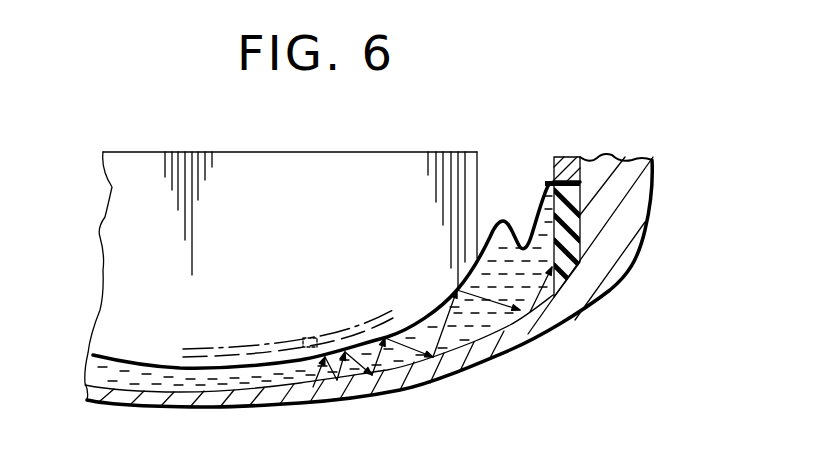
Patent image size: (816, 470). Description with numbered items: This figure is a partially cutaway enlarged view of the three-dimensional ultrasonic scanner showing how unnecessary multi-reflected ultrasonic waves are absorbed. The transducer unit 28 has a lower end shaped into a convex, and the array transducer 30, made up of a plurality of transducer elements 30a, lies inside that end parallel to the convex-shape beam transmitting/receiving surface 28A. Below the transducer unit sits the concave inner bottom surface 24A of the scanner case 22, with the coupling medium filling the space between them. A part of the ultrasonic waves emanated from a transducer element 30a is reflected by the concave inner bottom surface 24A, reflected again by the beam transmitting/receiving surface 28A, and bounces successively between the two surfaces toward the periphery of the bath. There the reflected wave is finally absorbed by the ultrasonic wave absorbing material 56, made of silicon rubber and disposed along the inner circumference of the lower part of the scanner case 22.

The scanner case 22 is at (640, 204).
The ultrasonic wave absorbing material 56 is at (565, 236).
The transducer unit 28 is at (114, 240).
The beam transmitting/receiving surface 28A is at (181, 365).
The array transducer 30 is at (272, 335).
The transducer element 30a is at (315, 335).
The concave inner bottom surface 24A is at (309, 399).